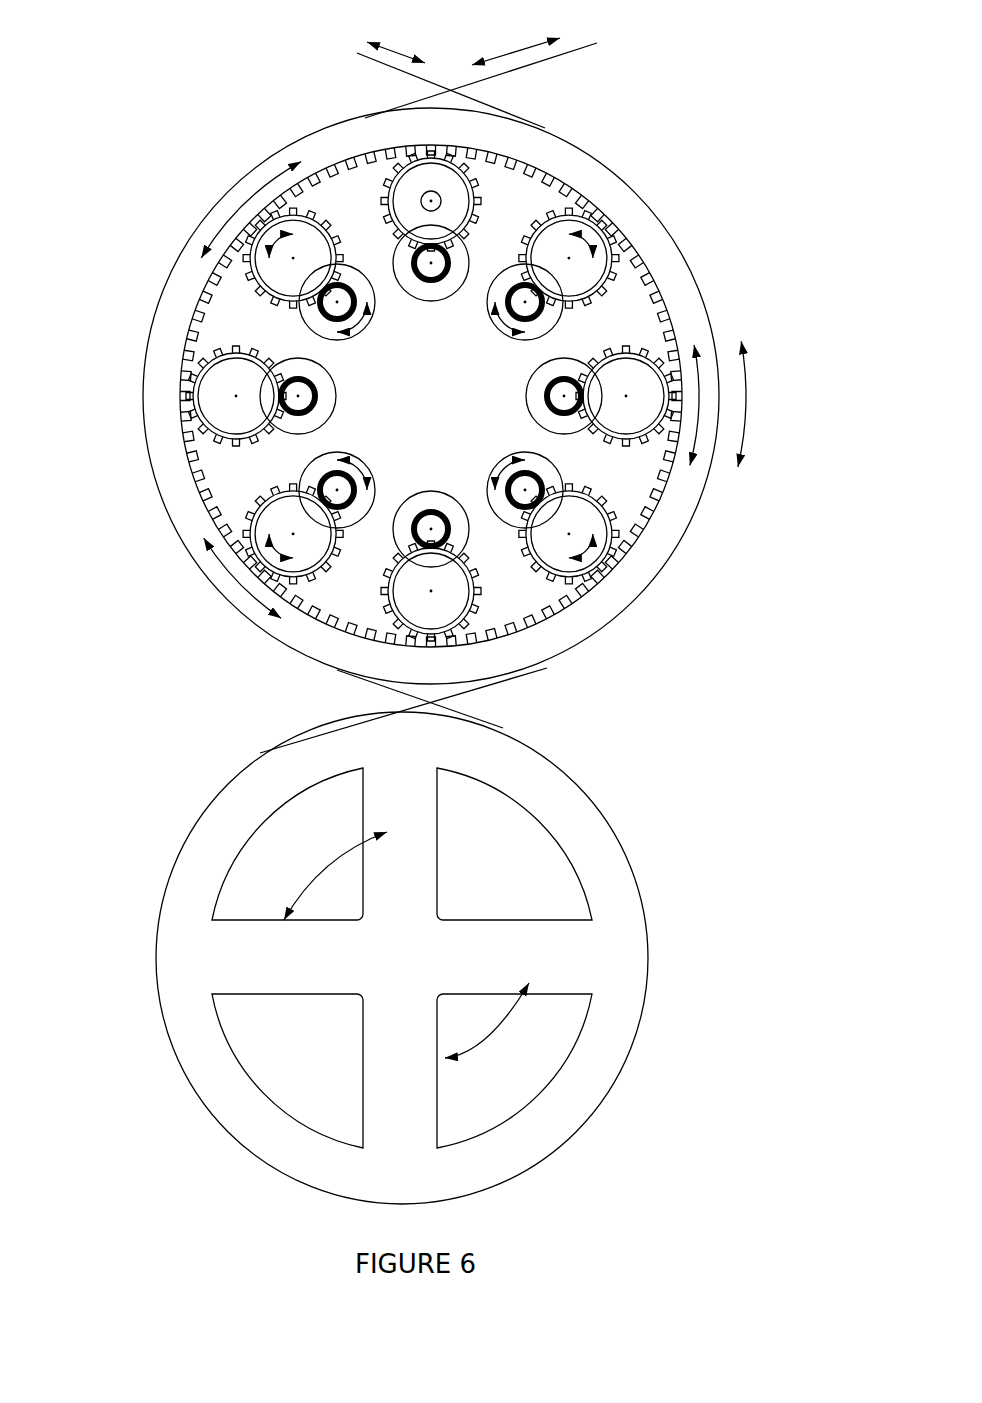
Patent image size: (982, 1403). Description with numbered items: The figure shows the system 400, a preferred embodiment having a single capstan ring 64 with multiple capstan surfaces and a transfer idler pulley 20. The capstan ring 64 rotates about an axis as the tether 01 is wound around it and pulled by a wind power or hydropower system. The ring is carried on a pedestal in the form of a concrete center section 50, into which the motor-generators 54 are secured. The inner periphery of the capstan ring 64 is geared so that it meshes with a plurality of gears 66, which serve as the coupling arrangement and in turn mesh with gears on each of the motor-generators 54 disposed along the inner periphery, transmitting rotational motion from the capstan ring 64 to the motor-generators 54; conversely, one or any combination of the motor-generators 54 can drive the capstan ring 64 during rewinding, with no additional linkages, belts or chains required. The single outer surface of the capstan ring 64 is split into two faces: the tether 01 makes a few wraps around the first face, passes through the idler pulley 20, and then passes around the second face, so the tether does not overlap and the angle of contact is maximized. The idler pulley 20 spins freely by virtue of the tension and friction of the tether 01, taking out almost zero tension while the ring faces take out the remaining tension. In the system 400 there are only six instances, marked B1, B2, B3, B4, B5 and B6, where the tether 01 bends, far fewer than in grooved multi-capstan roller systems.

The system 400 is at (158, 106).
The tether 01 is at (598, 45).
The bend instance B1 is at (365, 108).
The bend instance B6 is at (522, 117).
The capstan ring 64 is at (580, 168).
The gears 66 is at (415, 192).
The motor-generators 54 is at (303, 467).
The concrete center section 50 is at (424, 400).
The bend instance B2 is at (318, 672).
The bend instance B3 is at (502, 728).
The bend instance B4 is at (266, 752).
The bend instance B5 is at (548, 669).
The idler pulley 20 is at (600, 888).